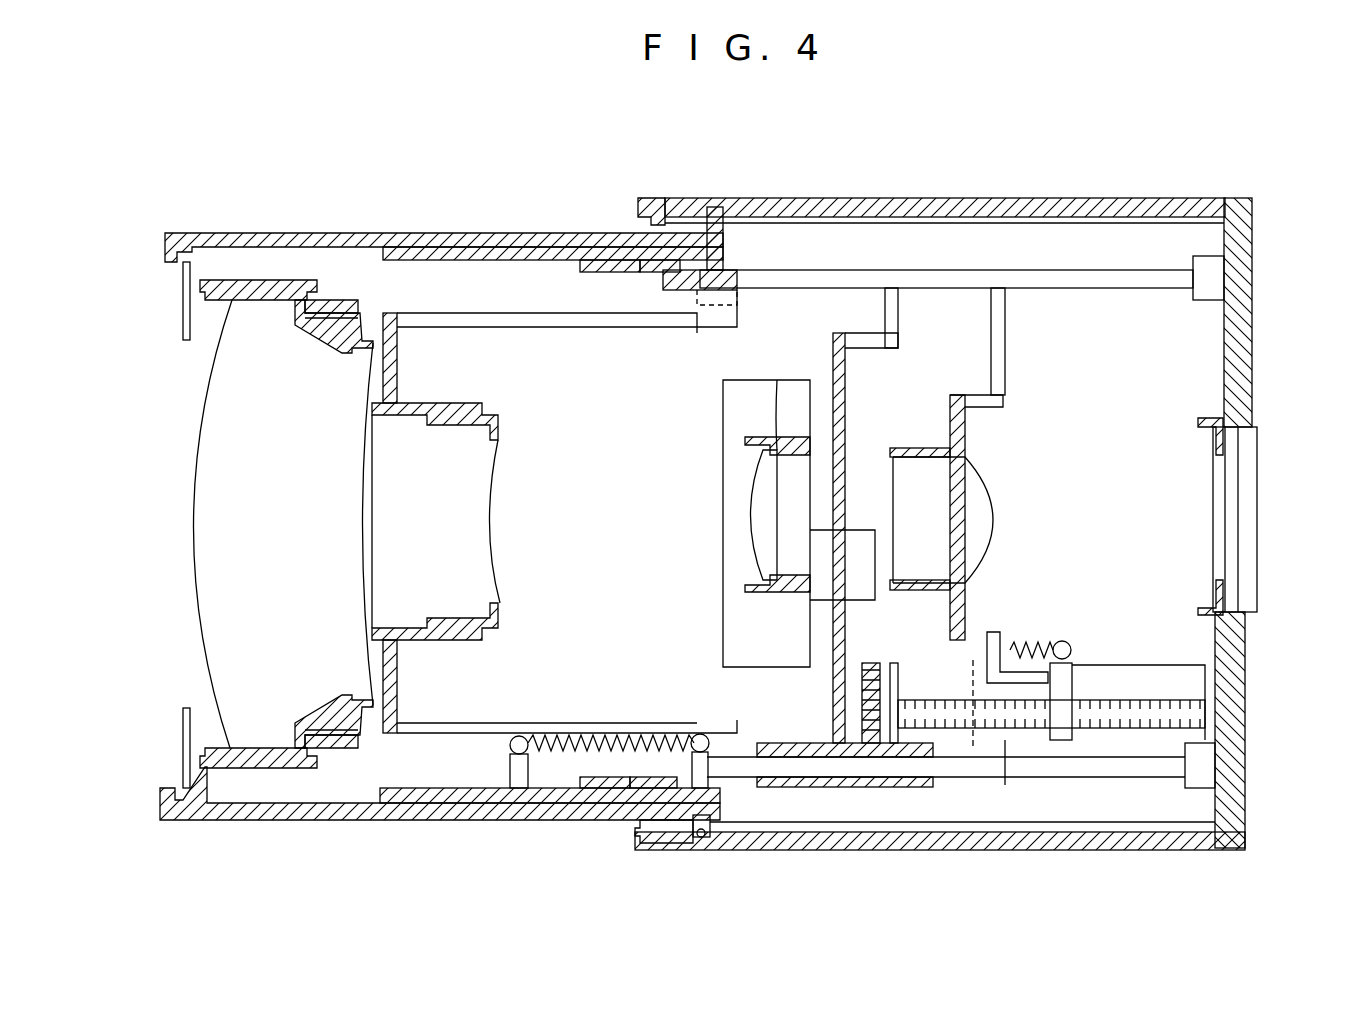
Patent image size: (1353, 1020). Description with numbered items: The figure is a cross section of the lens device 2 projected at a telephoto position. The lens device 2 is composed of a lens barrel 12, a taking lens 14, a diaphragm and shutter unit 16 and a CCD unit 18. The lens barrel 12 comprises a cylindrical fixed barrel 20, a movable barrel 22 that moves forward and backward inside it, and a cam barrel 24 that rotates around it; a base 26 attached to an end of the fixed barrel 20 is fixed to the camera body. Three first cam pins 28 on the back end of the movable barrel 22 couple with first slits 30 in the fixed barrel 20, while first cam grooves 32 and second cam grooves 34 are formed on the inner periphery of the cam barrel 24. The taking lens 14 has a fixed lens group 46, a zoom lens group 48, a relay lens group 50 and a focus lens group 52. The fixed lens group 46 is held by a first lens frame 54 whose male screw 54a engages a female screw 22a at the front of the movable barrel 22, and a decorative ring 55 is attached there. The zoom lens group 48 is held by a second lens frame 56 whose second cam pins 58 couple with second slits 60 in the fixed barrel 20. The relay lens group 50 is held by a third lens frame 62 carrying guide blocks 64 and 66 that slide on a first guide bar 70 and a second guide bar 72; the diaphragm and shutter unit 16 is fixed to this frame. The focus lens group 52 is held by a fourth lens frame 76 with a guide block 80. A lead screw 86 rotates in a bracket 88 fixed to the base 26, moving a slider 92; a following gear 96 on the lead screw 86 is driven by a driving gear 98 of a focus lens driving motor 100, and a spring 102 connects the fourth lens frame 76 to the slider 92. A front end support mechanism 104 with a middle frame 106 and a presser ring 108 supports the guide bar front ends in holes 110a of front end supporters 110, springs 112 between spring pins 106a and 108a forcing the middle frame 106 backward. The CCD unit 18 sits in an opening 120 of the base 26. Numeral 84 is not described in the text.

The lens device 2 is at (234, 188).
The lens barrel 12 is at (1028, 193).
The taking lens 14 is at (183, 578).
The diaphragm and shutter unit 16 is at (698, 385).
The CCD unit 18 is at (1245, 472).
The fixed barrel 20 is at (976, 528).
The movable barrel 22 is at (425, 233).
The female screw 22a is at (338, 330).
The cam barrel 24 is at (962, 205).
The base 26 is at (1243, 326).
The first cam pins 28 is at (712, 825).
The first slits 30 is at (828, 835).
The first cam grooves 32 is at (705, 838).
The second cam grooves 34 is at (715, 207).
The fixed lens group 46 is at (212, 458).
The zoom lens group 48 is at (385, 518).
The relay lens group 50 is at (752, 520).
The focus lens group 52 is at (988, 520).
The first lens frame 54 is at (258, 280).
The male screw 54a is at (335, 300).
The decorative ring 55 is at (183, 318).
The second lens frame 56 is at (465, 405).
The second cam pins 58 is at (752, 215).
The second slits 60 is at (822, 212).
The third lens frame 62 is at (786, 395).
The guide block 64 is at (890, 790).
The guide block 66 is at (893, 272).
The first guide bar 70 is at (1020, 770).
The second guide bar 72 is at (1108, 268).
The fourth lens frame 76 is at (965, 433).
The guide block 80 is at (998, 272).
The drive mechanism 84 is at (1130, 648).
The lead screw 86 is at (1145, 780).
The bracket 88 is at (1190, 790).
The slider 92 is at (1078, 742).
The following gear 96 is at (875, 668).
The driving gear 98 is at (860, 668).
The focus lens driving motor 100 is at (973, 752).
The spring 102 is at (1035, 648).
The front end support mechanism 104 is at (495, 712).
The middle frame 106 is at (510, 250).
The spring pins 106a is at (522, 738).
The presser ring 108 is at (733, 270).
The spring pins 108a is at (712, 762).
The front end supporters 110 is at (655, 262).
The holes 110a is at (590, 262).
The springs 112 is at (635, 735).
The opening 120 is at (1252, 432).